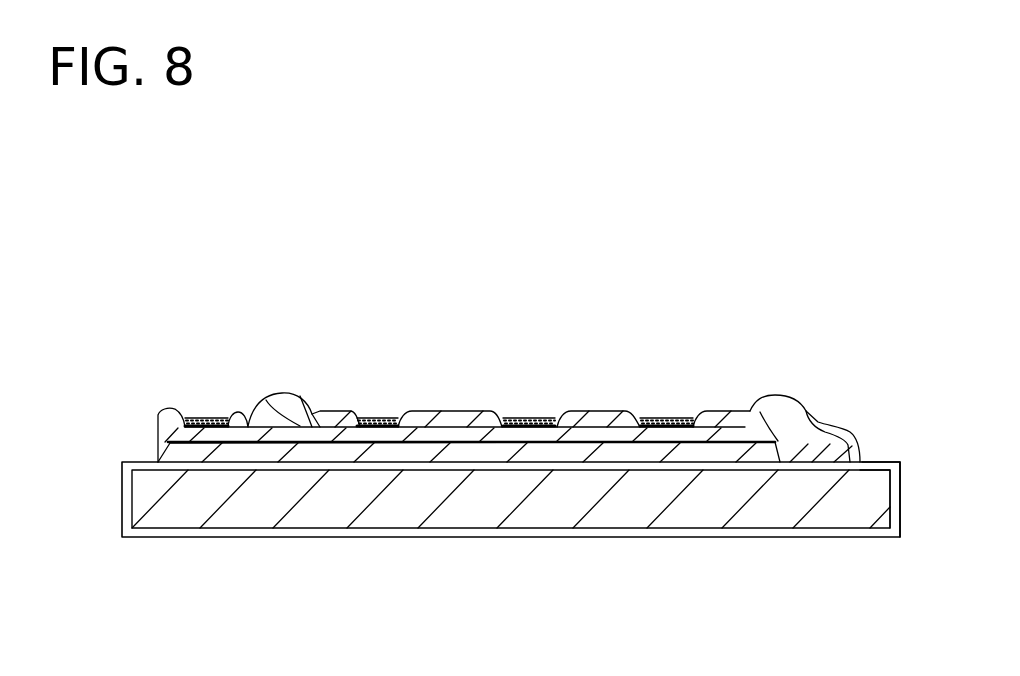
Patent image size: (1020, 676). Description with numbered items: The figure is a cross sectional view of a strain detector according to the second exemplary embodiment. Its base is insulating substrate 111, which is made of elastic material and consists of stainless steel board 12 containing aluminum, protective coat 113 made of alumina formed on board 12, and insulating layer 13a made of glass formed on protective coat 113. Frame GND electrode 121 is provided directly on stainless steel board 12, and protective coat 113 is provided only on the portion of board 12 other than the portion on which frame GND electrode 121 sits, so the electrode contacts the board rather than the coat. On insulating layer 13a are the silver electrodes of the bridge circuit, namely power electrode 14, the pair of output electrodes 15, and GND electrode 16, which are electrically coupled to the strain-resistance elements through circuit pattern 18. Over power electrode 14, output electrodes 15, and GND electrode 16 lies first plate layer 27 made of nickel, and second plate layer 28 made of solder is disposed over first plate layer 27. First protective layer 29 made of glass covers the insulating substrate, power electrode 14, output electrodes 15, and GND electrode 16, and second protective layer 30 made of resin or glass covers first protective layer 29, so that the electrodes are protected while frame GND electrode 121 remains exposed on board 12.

The stainless steel board 12 is at (472, 507).
The insulating substrate 111 is at (557, 507).
The protective coat 113 is at (877, 463).
The insulating layer 13a is at (358, 462).
The power electrode 14 is at (371, 420).
The output electrodes 15 is at (190, 424).
The ground electrode 16 is at (633, 418).
The circuit pattern 18 is at (306, 414).
The first plate layer 27 is at (681, 420).
The second plate layer 28 is at (654, 420).
The first protective layer 29 is at (240, 418).
The second protective layer 30 is at (266, 414).
The frame GND electrode 121 is at (801, 447).